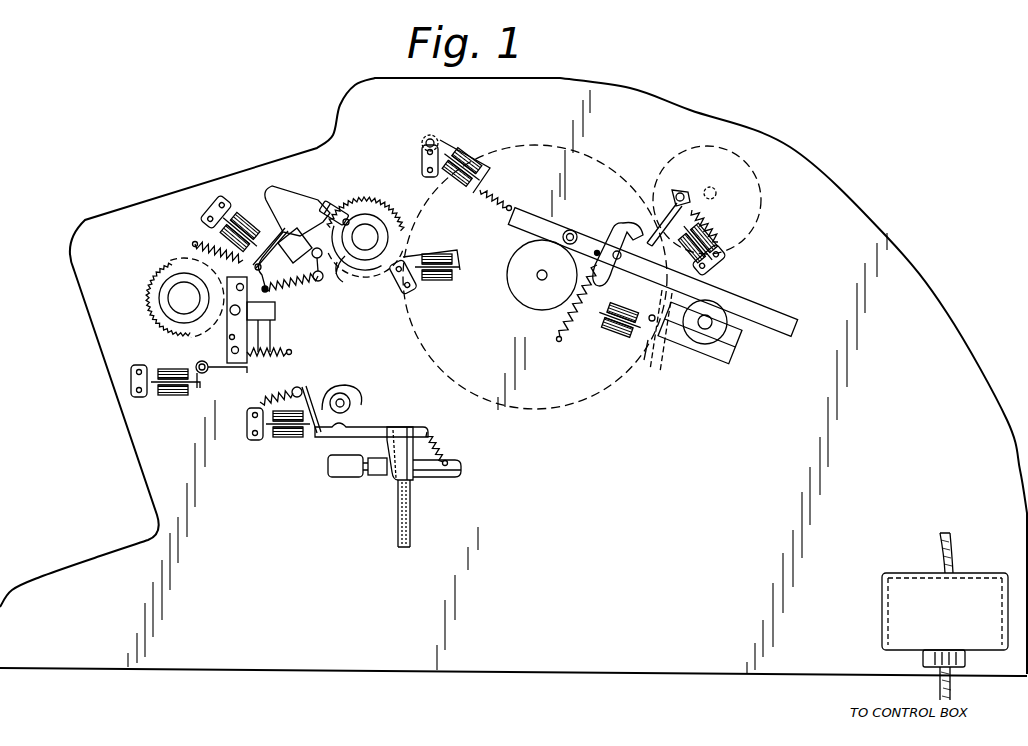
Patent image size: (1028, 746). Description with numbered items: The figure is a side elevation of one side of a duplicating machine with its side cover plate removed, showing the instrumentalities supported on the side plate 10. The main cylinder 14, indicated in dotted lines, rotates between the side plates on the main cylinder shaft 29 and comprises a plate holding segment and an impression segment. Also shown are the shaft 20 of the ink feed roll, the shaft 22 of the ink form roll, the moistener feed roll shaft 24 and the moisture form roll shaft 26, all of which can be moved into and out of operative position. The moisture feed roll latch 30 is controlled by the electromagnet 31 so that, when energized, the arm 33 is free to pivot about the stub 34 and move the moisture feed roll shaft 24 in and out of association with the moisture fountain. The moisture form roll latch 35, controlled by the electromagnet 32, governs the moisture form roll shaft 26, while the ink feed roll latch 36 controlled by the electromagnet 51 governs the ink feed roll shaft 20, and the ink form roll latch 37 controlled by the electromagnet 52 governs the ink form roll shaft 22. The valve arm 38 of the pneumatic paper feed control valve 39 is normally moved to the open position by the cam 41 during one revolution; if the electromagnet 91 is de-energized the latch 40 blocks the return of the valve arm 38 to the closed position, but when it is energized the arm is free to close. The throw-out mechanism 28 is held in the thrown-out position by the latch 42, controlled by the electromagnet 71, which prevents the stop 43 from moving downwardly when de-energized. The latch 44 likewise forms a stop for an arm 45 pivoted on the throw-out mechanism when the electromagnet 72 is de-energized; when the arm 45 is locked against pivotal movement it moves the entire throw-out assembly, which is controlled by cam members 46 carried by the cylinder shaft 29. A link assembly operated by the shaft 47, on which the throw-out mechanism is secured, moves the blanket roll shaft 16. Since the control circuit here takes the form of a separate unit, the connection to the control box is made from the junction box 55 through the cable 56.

The side plate 10 is at (787, 158).
The main cylinder 14 is at (603, 152).
The blanket roll shaft 16 is at (716, 193).
The ink feed roll shaft 20 is at (233, 312).
The ink form roll shaft 22 is at (400, 283).
The moistener feed roll shaft 24 is at (347, 219).
The moisture form roll shaft 26 is at (432, 139).
The throw-out mechanism 28 is at (595, 222).
The main cylinder shaft 29 is at (540, 283).
The moisture feed roll latch 30 is at (282, 203).
The electromagnet 31 is at (250, 207).
The electromagnet 32 is at (460, 180).
The arm 33 is at (350, 276).
The stub 34 is at (320, 283).
The moisture form roll latch 35 is at (470, 150).
The ink feed roll latch 36 is at (227, 372).
The ink form roll latch 37 is at (430, 262).
The valve arm 38 is at (405, 428).
The valve 39 is at (412, 478).
The latch 40 is at (308, 398).
The cam 41 is at (366, 397).
The latch 42 is at (667, 198).
The stop 43 is at (628, 230).
The latch 44 is at (648, 342).
The arm 45 is at (683, 270).
The cam members 46 is at (514, 309).
The shaft 47 is at (707, 330).
The electromagnet 51 is at (173, 397).
The electromagnet 52 is at (437, 278).
The junction box 55 is at (960, 613).
The cable 56 is at (953, 688).
The electromagnet 71 is at (713, 233).
The electromagnet 72 is at (607, 335).
The electromagnet 91 is at (283, 438).